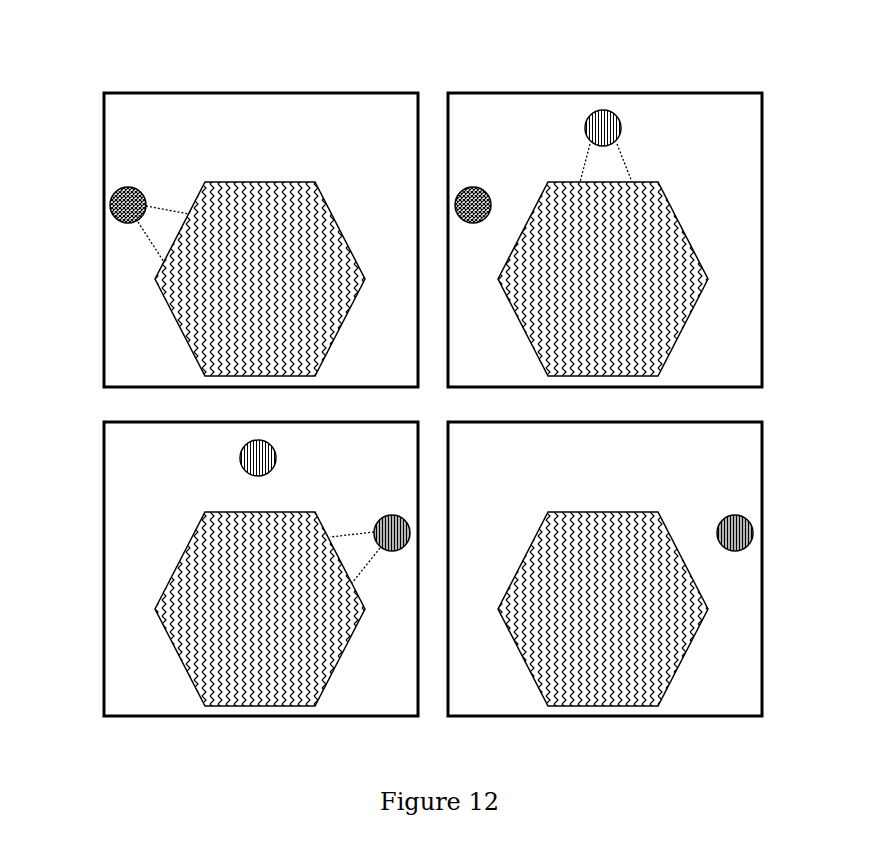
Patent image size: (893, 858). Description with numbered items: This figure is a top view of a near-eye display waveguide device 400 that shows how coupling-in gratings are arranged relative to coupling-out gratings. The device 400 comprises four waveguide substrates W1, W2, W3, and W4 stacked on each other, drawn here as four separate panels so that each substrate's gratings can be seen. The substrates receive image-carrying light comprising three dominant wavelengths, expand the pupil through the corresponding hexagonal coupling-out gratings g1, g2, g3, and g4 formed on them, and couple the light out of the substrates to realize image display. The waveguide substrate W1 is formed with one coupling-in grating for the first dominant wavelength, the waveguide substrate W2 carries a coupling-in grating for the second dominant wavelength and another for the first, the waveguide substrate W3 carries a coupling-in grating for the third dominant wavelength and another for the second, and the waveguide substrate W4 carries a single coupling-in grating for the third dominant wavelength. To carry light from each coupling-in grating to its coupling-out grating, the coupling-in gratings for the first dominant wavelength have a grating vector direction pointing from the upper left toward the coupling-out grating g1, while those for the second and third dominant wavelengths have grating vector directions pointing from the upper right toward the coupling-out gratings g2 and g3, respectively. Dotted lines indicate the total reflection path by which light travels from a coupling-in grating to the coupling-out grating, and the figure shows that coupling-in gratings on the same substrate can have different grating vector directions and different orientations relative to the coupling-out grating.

The near-eye display waveguide device 400 is at (407, 58).
The waveguide substrate W1 is at (104, 250).
The waveguide substrate W2 is at (763, 255).
The waveguide substrate W3 is at (104, 578).
The waveguide substrate W4 is at (763, 575).
The coupling-out grating g1 is at (178, 330).
The coupling-out grating g2 is at (521, 330).
The coupling-out grating g3 is at (180, 660).
The coupling-out grating g4 is at (523, 660).